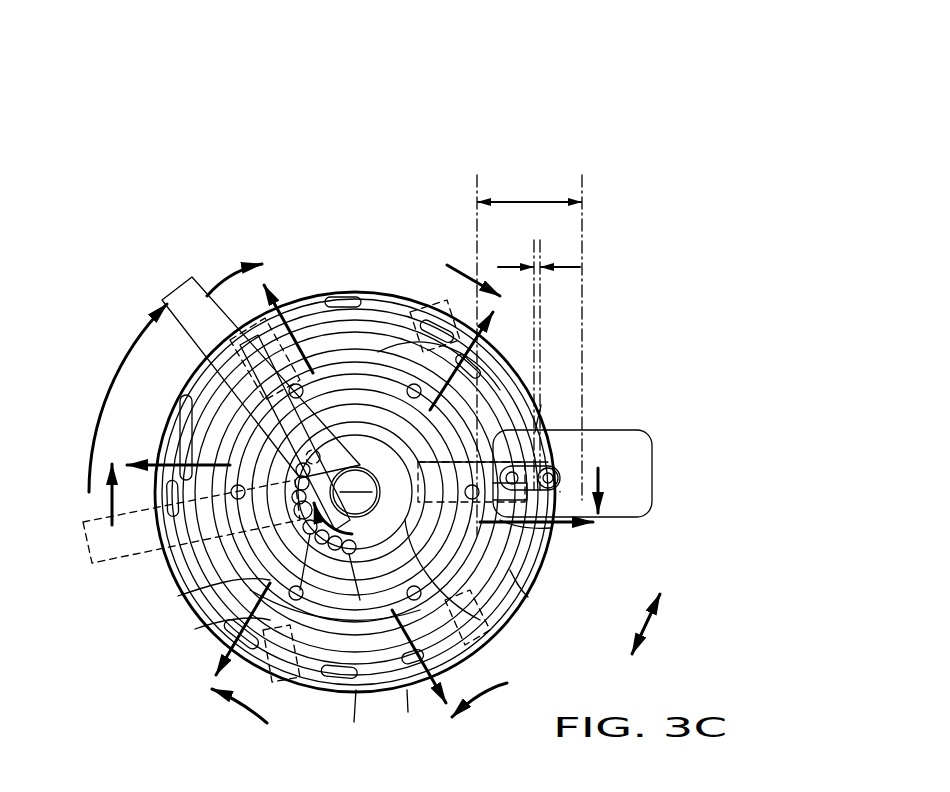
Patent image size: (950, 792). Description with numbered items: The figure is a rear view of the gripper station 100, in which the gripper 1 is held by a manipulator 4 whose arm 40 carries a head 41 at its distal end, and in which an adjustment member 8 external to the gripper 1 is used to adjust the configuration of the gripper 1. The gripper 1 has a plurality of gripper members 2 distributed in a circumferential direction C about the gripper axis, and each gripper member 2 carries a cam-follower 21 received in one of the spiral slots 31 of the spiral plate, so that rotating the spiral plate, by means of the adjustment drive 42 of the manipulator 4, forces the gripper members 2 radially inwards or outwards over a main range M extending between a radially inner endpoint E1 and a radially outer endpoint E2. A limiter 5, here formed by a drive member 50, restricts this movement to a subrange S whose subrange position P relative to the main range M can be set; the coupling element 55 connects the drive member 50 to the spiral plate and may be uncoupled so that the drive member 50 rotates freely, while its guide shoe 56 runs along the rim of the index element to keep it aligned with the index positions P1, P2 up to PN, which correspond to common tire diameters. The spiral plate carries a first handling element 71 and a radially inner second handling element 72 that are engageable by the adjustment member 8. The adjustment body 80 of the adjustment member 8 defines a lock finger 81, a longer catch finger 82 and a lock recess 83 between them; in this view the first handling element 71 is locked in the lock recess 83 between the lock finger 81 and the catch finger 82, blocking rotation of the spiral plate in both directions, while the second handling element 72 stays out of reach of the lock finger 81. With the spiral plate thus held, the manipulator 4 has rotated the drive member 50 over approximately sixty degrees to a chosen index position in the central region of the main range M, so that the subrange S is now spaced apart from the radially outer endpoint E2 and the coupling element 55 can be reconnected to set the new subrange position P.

The gripper station 100 is at (594, 107).
The gripper 1 is at (657, 194).
The gripper members 2 is at (288, 330).
The manipulator 4 is at (166, 297).
The arm 40 is at (188, 278).
The limiter 5 is at (112, 398).
The drive member 50 is at (185, 425).
The adjustment member 8 is at (662, 394).
The cam-follower 21 is at (343, 298).
The spiral slots 31 is at (378, 352).
The head 41 is at (538, 569).
The adjustment drive 42 is at (528, 597).
The coupling element 55 is at (195, 629).
The guide shoe 56 is at (178, 596).
The first handling element 71 is at (552, 466).
The second handling element 72 is at (541, 420).
The adjustment body 80 is at (628, 518).
The lock finger 81 is at (541, 435).
The catch finger 82 is at (550, 527).
The lock recess 83 is at (600, 462).
The radially inner endpoint E1 is at (483, 340).
The radially outer endpoint E2 is at (583, 323).
The main range M is at (529, 186).
The subrange position P is at (534, 255).
The subrange S is at (539, 271).
The index position PN is at (320, 458).
The index position P1 is at (409, 713).
The index position P2 is at (356, 718).
The circumferential direction C is at (656, 625).